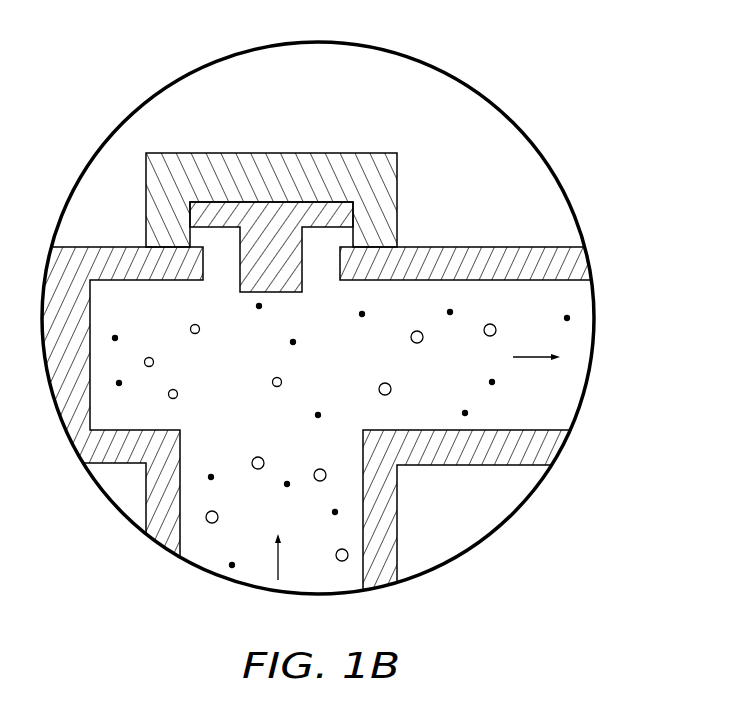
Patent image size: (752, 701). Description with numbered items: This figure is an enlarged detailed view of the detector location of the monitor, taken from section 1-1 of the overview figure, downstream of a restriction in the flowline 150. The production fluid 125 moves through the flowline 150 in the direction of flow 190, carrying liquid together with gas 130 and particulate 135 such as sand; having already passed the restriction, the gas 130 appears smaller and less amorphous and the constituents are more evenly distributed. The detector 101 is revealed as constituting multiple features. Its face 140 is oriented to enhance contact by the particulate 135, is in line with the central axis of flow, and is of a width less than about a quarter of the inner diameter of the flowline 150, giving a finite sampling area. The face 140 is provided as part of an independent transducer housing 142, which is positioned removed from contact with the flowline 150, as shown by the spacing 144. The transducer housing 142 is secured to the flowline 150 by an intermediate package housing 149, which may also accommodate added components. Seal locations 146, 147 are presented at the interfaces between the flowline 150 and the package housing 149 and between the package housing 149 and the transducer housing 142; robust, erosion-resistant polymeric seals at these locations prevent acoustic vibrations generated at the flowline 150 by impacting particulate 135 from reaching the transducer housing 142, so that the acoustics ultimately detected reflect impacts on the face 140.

The section line 1-1 is at (428, 64).
The detector 101 is at (335, 119).
The package housing 149 is at (233, 160).
The seal location 147 is at (137, 239).
The transducer housing 142 is at (290, 260).
The flowline 150 is at (487, 258).
The seal location 146 is at (210, 238).
The face 140 is at (277, 310).
The spacing 144 is at (319, 275).
The production fluid 125 is at (259, 429).
The gas 130 is at (391, 386).
The particulate 135 is at (318, 412).
The flow 190 is at (520, 358).